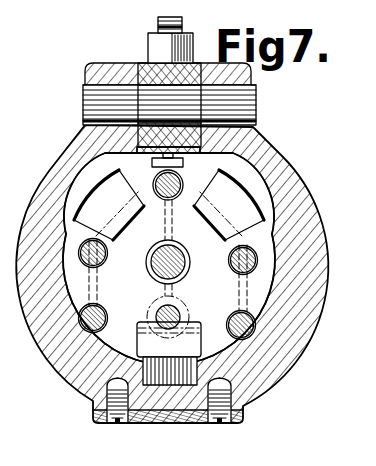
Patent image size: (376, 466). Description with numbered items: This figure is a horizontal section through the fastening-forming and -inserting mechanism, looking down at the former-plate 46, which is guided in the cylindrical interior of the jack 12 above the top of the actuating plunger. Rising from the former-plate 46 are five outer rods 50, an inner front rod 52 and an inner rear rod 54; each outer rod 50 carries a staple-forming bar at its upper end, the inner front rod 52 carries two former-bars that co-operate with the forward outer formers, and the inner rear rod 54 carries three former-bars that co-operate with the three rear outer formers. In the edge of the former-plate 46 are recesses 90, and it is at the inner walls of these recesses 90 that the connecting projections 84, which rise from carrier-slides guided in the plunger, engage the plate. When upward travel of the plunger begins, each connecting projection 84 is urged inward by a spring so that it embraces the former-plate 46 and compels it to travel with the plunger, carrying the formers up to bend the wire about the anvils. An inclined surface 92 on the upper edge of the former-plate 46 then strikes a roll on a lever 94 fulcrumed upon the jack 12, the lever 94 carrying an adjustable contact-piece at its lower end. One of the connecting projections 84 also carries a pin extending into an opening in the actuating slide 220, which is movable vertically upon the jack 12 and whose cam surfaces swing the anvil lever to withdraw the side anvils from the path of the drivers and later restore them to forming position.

The jack 12 is at (320, 310).
The former-plate 46 is at (268, 245).
The outer rods 50 is at (183, 172).
The inner front rod 52 is at (158, 311).
The inner rear rod 54 is at (151, 263).
The connecting projection 84 is at (142, 208).
The recesses 90 is at (103, 185).
The inclined surface 92 is at (137, 157).
The lever 94 is at (145, 64).
The actuating slide 220 is at (193, 423).